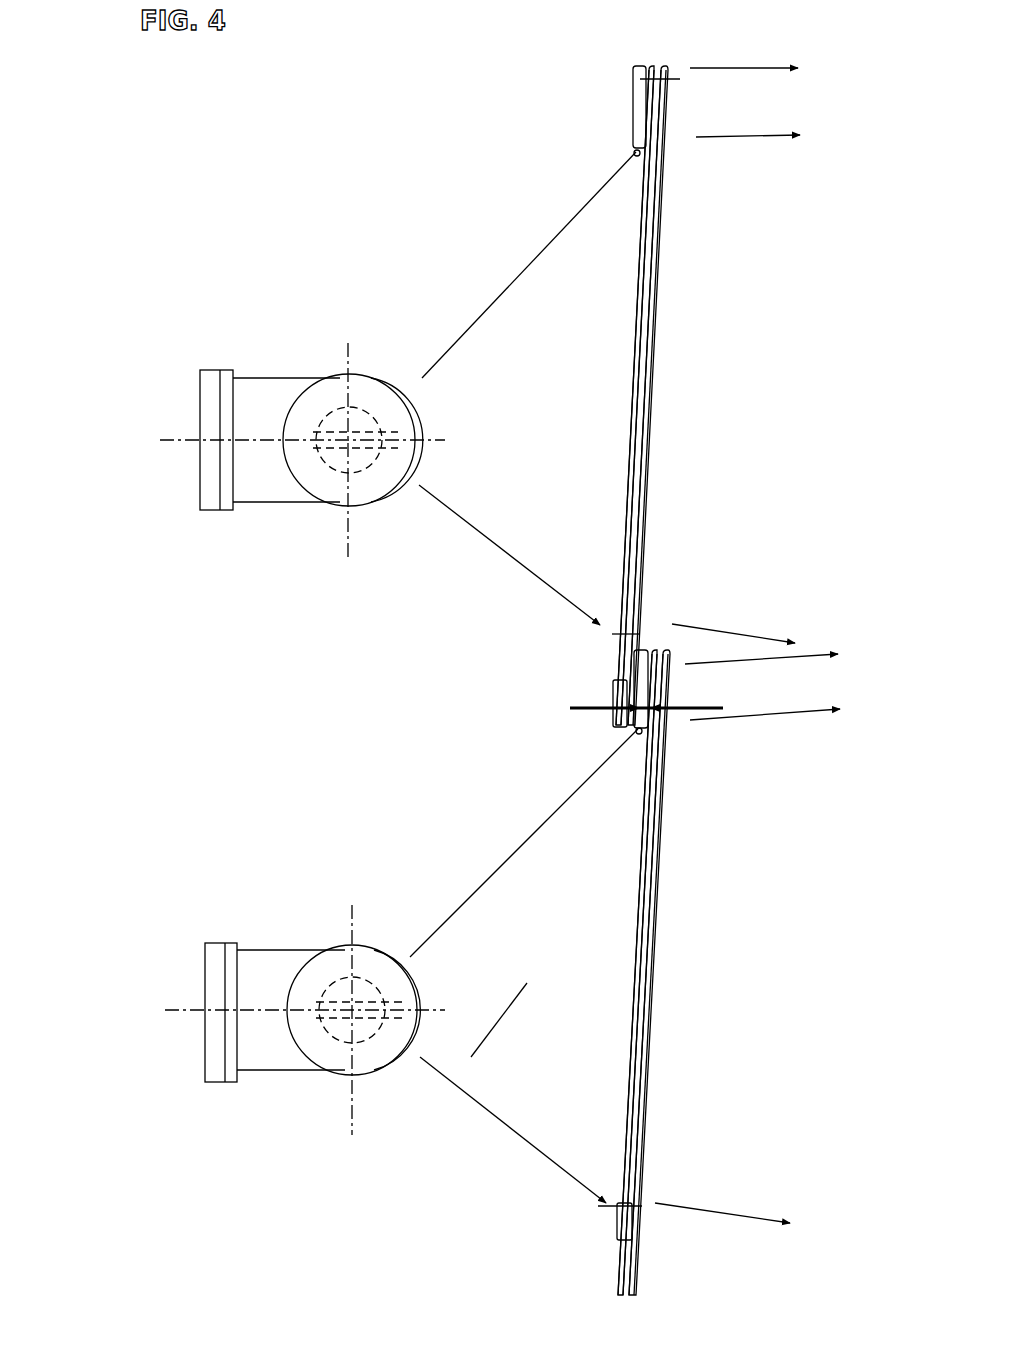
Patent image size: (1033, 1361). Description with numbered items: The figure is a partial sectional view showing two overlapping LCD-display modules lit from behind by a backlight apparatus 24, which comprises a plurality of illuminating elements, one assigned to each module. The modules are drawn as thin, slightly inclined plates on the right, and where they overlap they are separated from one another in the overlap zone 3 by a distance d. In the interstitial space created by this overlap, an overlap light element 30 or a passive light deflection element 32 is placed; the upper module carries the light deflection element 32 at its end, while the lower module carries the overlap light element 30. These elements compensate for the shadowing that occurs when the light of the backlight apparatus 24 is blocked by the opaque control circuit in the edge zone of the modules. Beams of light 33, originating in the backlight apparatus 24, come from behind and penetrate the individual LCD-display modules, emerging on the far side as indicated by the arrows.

The overlap zone 3 is at (598, 683).
The backlight apparatus 24 is at (145, 518).
The overlap light element 30 is at (645, 697).
The passive light deflection element 32 is at (638, 110).
The beams of light 33 is at (518, 277).
The distance d is at (634, 708).